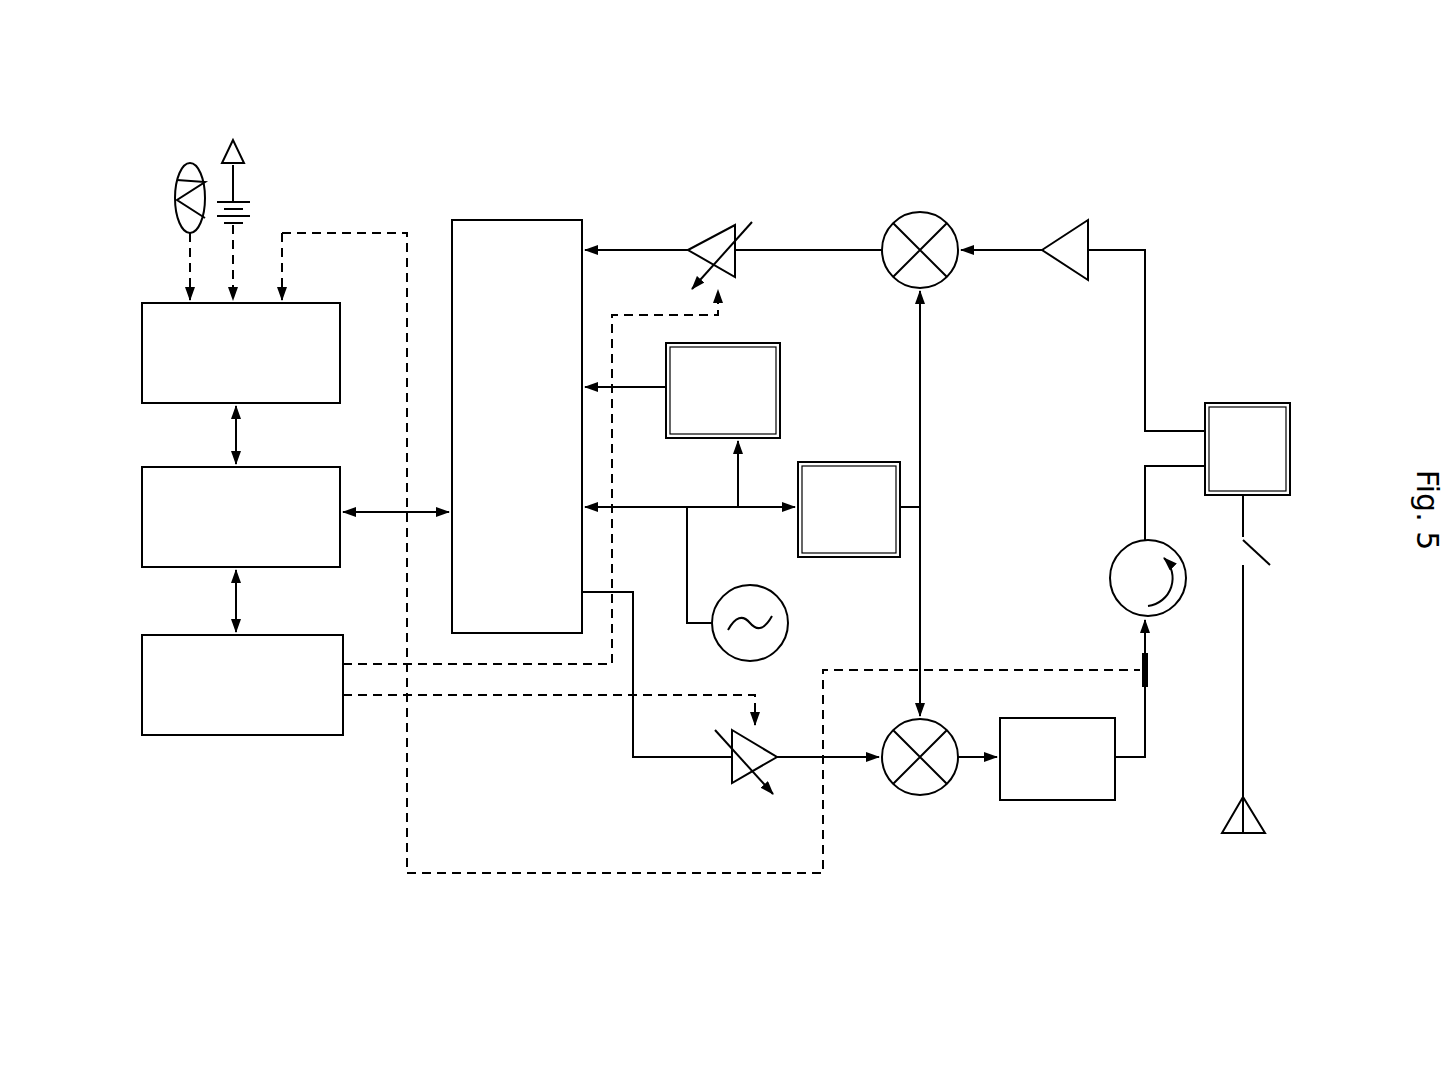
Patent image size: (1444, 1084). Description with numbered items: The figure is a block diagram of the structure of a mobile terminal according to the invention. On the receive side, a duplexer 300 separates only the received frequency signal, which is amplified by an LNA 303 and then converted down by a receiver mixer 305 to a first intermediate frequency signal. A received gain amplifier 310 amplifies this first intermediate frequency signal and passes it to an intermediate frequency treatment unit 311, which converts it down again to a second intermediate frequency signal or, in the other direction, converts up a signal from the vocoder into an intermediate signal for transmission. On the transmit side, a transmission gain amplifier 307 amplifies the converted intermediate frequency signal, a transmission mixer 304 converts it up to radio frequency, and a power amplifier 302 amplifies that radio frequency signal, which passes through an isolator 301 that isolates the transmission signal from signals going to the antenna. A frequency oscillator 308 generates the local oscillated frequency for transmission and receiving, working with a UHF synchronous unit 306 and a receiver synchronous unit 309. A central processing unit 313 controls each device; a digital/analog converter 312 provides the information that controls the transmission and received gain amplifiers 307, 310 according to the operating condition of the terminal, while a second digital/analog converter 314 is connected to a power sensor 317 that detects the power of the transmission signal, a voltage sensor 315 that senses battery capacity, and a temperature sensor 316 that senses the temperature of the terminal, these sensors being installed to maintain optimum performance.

The duplexer 300 is at (1213, 497).
The isolator 301 is at (1175, 618).
The power amplifier 302 is at (1012, 801).
The LNA 303 is at (1070, 255).
The transmission mixer 304 is at (912, 785).
The receiver mixer 305 is at (938, 290).
The UHF synchronous unit 306 is at (840, 461).
The transmission gain amplifier 307 is at (730, 775).
The frequency oscillator 308 is at (788, 617).
The receiver synchronous unit 309 is at (781, 370).
The received gain amplifier 310 is at (693, 248).
The intermediate frequency treatment unit 311 is at (535, 222).
The digital/analog converter 312 is at (248, 736).
The central processing unit 313 is at (302, 568).
The digital/analog converter 314 is at (297, 404).
The voltage sensor 315 is at (252, 212).
The temperature sensor 316 is at (176, 200).
The power sensor 317 is at (1148, 690).